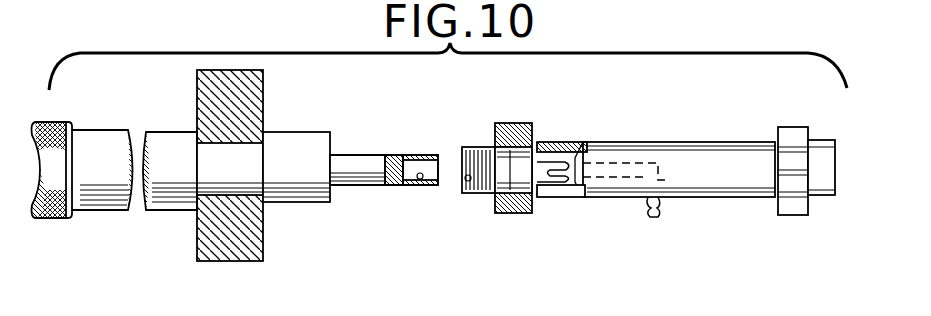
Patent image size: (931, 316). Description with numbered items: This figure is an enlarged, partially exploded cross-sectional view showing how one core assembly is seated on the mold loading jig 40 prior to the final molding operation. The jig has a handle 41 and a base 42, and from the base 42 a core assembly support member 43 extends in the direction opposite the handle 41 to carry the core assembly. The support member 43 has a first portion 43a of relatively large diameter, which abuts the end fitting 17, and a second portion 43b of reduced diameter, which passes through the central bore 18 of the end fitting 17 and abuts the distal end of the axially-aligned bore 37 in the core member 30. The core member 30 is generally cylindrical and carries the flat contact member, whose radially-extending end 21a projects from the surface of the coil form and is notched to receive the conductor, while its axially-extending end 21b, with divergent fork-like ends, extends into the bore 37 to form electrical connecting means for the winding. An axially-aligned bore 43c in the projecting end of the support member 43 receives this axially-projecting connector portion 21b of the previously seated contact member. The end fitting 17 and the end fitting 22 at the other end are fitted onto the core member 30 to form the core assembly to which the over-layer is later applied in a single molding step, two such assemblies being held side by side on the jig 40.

The end fitting 17 is at (514, 123).
The central bore 18 is at (477, 193).
The radially-extending end 21a is at (658, 212).
The axially-extending end 21b is at (550, 145).
The end fitting 22 is at (818, 140).
The core member 30 is at (670, 147).
The axially-aligned bore 37 is at (548, 190).
The mold loading jig 40 is at (260, 265).
The handle 41 is at (177, 126).
The base 42 is at (265, 97).
The core assembly support member 43 is at (393, 163).
The first portion 43a is at (330, 200).
The second portion 43b is at (372, 175).
The axially-aligned bore 43c is at (430, 183).